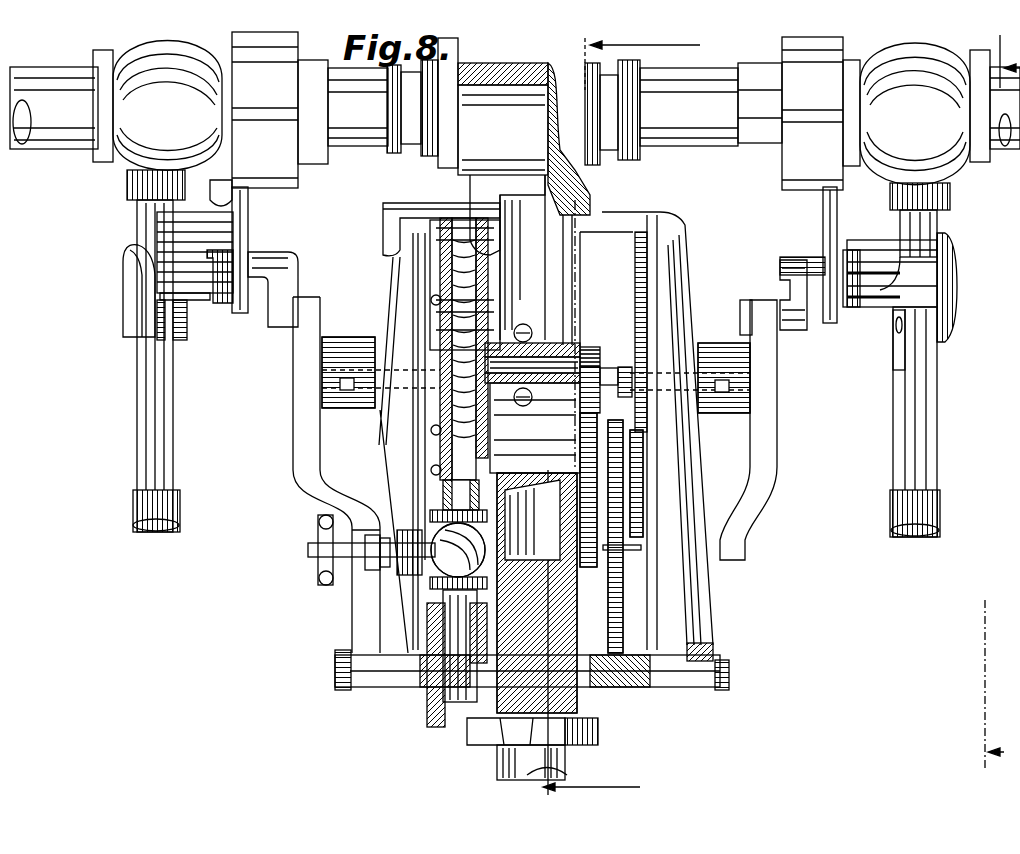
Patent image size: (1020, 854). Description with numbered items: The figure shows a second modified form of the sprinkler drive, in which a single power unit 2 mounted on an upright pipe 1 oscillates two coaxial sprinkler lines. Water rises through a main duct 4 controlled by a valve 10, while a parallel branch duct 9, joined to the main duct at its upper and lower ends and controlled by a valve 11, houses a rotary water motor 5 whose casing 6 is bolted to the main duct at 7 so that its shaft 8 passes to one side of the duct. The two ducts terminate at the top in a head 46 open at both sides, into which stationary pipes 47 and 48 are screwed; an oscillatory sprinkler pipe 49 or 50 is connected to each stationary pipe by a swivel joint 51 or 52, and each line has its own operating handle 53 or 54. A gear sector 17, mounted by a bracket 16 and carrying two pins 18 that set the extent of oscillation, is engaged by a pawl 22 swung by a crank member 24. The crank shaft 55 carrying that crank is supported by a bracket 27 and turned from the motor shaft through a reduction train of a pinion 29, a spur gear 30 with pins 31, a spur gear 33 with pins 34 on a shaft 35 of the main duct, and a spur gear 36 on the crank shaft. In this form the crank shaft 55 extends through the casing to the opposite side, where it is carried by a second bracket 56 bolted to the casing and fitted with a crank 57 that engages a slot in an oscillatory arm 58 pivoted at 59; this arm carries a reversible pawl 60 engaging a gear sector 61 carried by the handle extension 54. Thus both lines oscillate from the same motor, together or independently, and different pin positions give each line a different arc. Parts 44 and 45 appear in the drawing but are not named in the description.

The upright pipe 1 is at (497, 766).
The power unit 2 is at (460, 347).
The main duct 4 is at (537, 322).
The rotary water motor 5 is at (440, 352).
The casing 6 is at (441, 426).
The bolting point 7 is at (523, 324).
The shaft 8 is at (540, 345).
The branch duct 9 is at (723, 406).
The valve 10 is at (611, 416).
The valve 11 is at (397, 549).
The bracket 16 is at (957, 300).
The gear sector 17 is at (823, 212).
The pins 18 is at (282, 255).
The pawl 22 is at (780, 277).
The crank member 24 is at (733, 420).
The bracket 27 is at (683, 484).
The pinion 29 is at (590, 350).
The spur gear 30 is at (598, 430).
The pins 31 is at (630, 460).
The spur gear 33 is at (628, 536).
The pins 34 is at (640, 548).
The shaft 35 is at (524, 538).
The spur gear 36 is at (635, 250).
The right bracket arm 44 is at (778, 432).
The bolt 45 is at (729, 672).
The head 46 is at (525, 58).
The stationary pipe 47 is at (694, 148).
The stationary pipe 48 is at (357, 145).
The oscillatory sprinkler pipe 49 is at (996, 165).
The oscillatory sprinkler pipe 50 is at (62, 135).
The swivel joint 51 is at (788, 192).
The swivel joint 52 is at (278, 172).
The operating handle 53 is at (895, 462).
The operating handle 54 is at (178, 445).
The crank shaft 55 is at (715, 378).
The second bracket 56 is at (382, 443).
The crank 57 is at (347, 338).
The oscillatory arm 58 is at (300, 450).
The pivot 59 is at (336, 672).
The reversible pawl 60 is at (300, 278).
The gear sector 61 is at (250, 205).